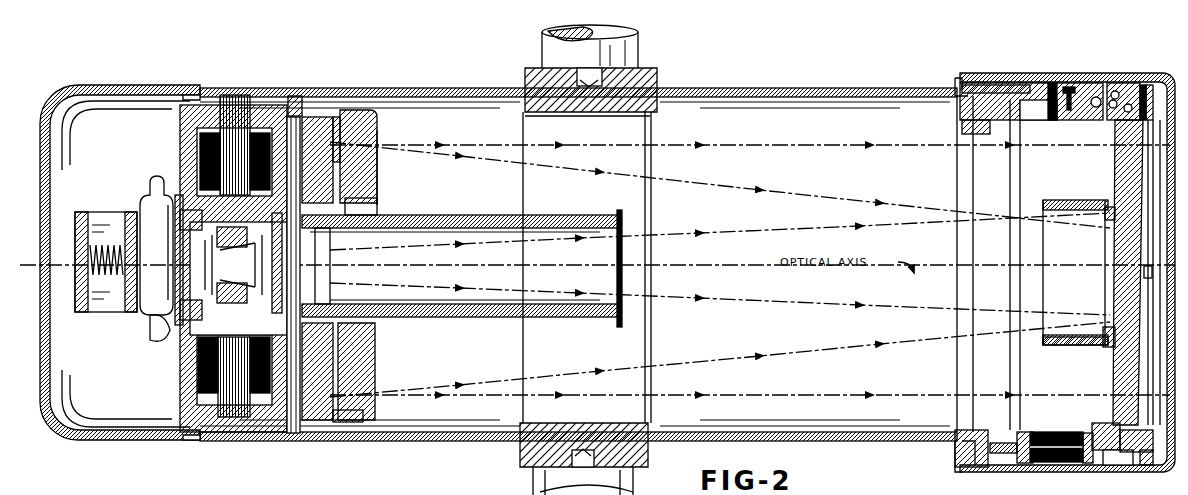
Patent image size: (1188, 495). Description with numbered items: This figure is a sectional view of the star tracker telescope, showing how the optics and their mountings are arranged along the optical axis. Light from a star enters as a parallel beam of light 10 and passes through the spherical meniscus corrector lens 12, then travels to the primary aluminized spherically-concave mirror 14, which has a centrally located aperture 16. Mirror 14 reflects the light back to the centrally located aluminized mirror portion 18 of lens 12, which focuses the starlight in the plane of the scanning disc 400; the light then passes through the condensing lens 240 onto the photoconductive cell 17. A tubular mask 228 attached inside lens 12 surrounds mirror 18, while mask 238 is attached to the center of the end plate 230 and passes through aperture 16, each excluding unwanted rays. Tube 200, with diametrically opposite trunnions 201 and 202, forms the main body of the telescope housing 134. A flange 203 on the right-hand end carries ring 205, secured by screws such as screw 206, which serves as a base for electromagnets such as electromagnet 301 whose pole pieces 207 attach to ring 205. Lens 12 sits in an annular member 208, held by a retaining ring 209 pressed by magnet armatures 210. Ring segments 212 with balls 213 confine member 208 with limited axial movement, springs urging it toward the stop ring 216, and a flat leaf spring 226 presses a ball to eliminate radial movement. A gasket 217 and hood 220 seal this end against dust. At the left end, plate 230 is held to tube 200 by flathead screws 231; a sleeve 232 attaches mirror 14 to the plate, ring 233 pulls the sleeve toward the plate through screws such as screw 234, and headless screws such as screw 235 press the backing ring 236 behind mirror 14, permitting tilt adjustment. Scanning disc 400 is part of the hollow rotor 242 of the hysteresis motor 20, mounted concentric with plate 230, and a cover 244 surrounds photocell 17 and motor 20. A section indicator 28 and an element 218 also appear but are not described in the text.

The parallel beam of light 10 is at (1085, 146).
The spherical meniscus corrector lens 12 is at (1115, 188).
The primary aluminized spherically-concave mirror 14 is at (374, 192).
The centrally located aperture 16 is at (378, 214).
The photoconductive cell 17 is at (150, 205).
The aluminized mirror portion 18 is at (1108, 250).
The hysteresis motor 20 is at (188, 165).
The section line 28 is at (1160, 494).
The telescope housing 134 is at (708, 76).
The tube 200 is at (822, 95).
The trunnion 201 is at (532, 484).
The trunnion 202 is at (645, 62).
The flange 203 is at (956, 460).
The ring 205 is at (968, 130).
The screw 206 is at (956, 82).
The pole piece 207 is at (1033, 465).
The annular member 208 is at (1108, 120).
The retaining ring 209 is at (1112, 424).
The magnet armature 210 is at (1105, 468).
The ring segment 212 is at (1068, 120).
The ball 213 is at (1113, 98).
The stop ring 216 is at (1144, 84).
The gasket 217 is at (1150, 84).
The lower seal 218 is at (1160, 463).
The hood 220 is at (1050, 74).
The flat leaf spring 226 is at (1078, 86).
The tubular mask 228 is at (1068, 345).
The end plate 230 is at (320, 230).
The flathead screw 231 is at (292, 437).
The sleeve 232 is at (368, 106).
The ring 233 is at (322, 112).
The screw 234 is at (296, 95).
The headless screw 235 is at (308, 434).
The backing ring 236 is at (338, 440).
The mask 238 is at (540, 216).
The condensing lens 240 is at (160, 290).
The hollow rotor 242 is at (178, 196).
The cover 244 is at (88, 440).
The electromagnet 301 is at (1072, 438).
The scanning disc 400 is at (172, 300).